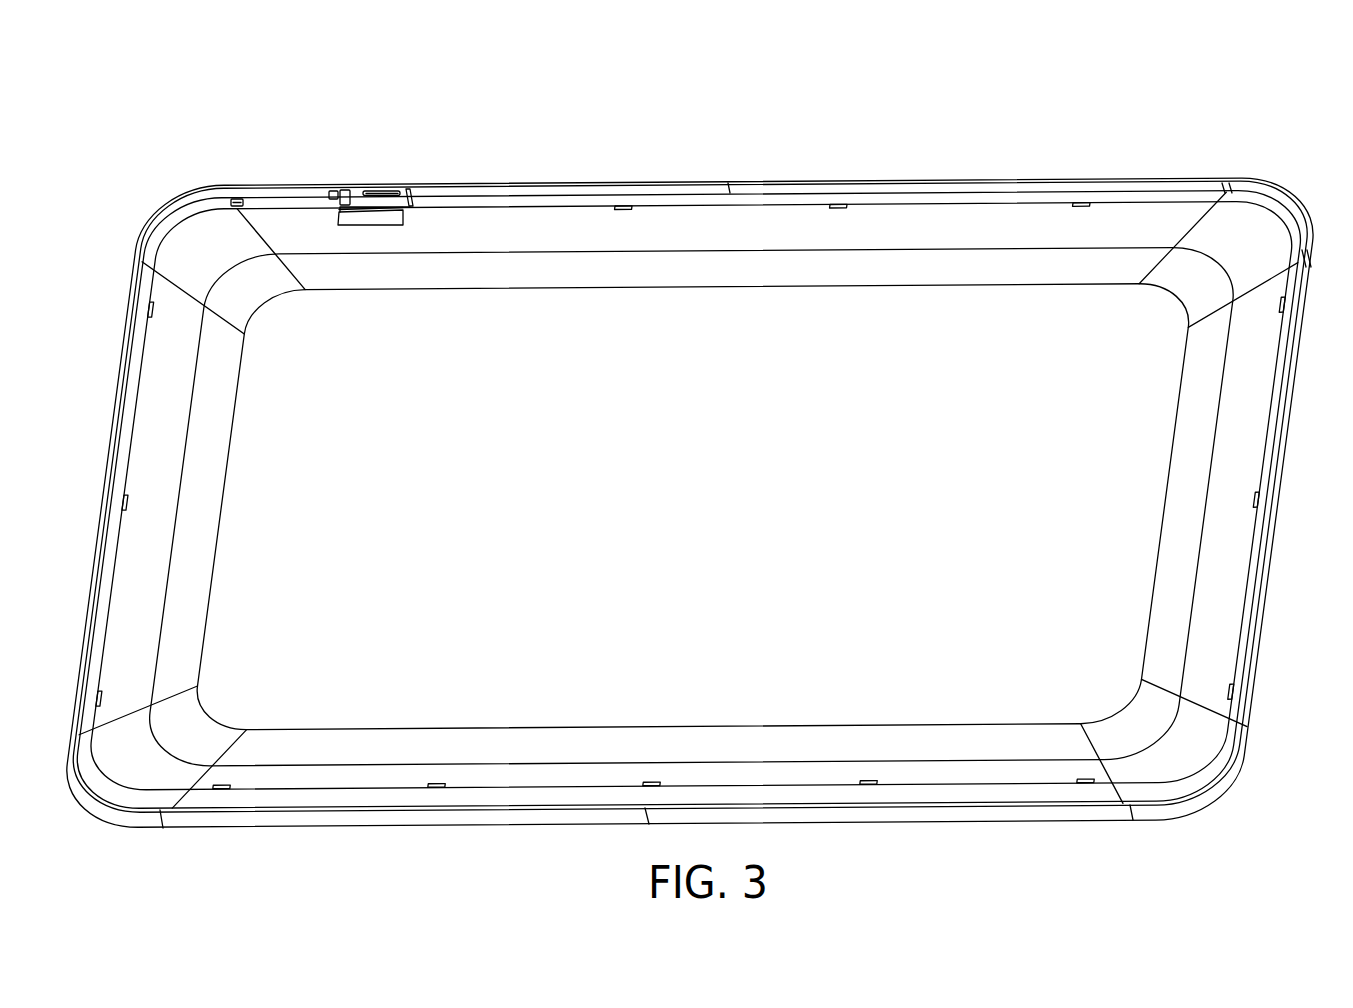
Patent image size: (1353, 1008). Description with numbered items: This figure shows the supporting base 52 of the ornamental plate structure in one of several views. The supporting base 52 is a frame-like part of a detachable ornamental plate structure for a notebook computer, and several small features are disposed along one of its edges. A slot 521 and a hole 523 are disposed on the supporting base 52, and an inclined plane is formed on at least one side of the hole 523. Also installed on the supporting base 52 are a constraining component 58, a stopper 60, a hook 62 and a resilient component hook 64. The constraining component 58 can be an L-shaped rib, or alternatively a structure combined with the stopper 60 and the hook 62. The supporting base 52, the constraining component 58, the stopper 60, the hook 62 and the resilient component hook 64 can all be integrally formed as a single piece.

The supporting base 52 is at (1190, 140).
The slot 521 is at (373, 217).
The hole 523 is at (397, 192).
The constraining component 58 is at (411, 196).
The stopper 60 is at (332, 191).
The hook 62 is at (344, 190).
The resilient component hook 64 is at (234, 199).